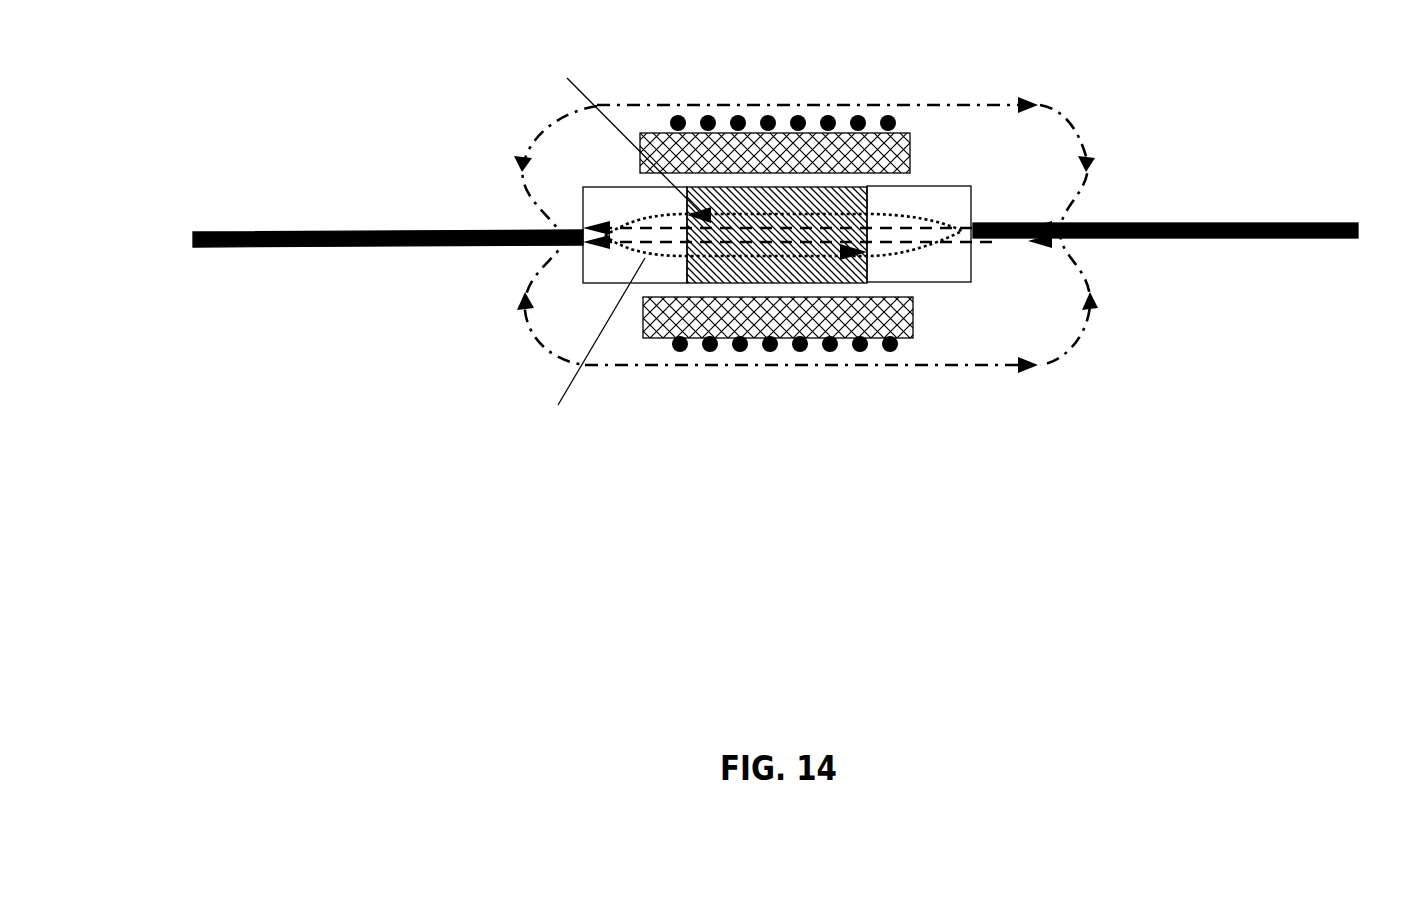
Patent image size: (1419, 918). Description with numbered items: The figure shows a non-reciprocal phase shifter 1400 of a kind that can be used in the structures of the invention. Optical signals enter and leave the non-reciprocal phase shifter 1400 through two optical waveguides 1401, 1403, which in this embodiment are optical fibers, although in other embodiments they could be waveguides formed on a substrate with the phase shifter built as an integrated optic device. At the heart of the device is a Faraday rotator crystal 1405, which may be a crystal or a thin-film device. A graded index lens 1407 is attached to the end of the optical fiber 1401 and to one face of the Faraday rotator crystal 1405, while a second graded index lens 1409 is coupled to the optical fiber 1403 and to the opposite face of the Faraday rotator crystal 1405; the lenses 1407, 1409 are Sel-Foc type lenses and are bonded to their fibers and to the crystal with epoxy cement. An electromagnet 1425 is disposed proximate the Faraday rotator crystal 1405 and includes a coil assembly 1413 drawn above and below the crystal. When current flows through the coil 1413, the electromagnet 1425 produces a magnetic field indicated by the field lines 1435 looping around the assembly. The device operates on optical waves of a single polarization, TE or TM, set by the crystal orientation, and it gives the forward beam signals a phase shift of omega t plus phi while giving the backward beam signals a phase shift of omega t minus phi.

The non-reciprocal phase shifter 1400 is at (786, 270).
The optical waveguide 1401 is at (465, 257).
The optical waveguide 1403 is at (1280, 223).
The Faraday rotator crystal 1405 is at (862, 194).
The graded index lens 1407 is at (627, 200).
The second graded index lens 1409 is at (960, 266).
The coil assembly 1413 is at (835, 118).
The electromagnet 1425 is at (794, 385).
The field lines 1435 is at (1075, 181).